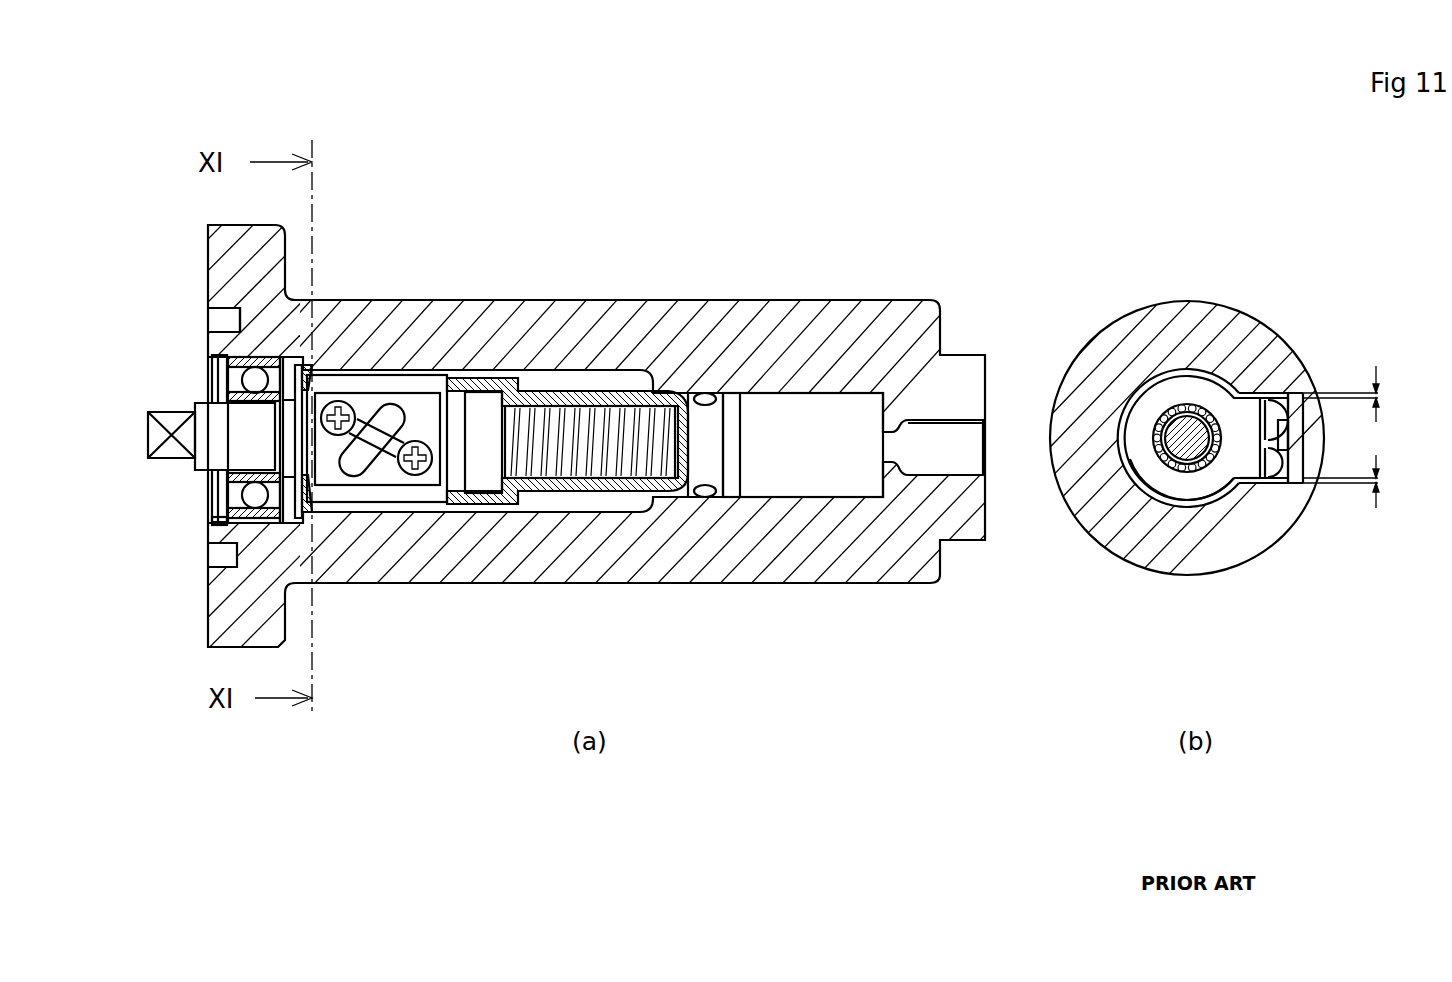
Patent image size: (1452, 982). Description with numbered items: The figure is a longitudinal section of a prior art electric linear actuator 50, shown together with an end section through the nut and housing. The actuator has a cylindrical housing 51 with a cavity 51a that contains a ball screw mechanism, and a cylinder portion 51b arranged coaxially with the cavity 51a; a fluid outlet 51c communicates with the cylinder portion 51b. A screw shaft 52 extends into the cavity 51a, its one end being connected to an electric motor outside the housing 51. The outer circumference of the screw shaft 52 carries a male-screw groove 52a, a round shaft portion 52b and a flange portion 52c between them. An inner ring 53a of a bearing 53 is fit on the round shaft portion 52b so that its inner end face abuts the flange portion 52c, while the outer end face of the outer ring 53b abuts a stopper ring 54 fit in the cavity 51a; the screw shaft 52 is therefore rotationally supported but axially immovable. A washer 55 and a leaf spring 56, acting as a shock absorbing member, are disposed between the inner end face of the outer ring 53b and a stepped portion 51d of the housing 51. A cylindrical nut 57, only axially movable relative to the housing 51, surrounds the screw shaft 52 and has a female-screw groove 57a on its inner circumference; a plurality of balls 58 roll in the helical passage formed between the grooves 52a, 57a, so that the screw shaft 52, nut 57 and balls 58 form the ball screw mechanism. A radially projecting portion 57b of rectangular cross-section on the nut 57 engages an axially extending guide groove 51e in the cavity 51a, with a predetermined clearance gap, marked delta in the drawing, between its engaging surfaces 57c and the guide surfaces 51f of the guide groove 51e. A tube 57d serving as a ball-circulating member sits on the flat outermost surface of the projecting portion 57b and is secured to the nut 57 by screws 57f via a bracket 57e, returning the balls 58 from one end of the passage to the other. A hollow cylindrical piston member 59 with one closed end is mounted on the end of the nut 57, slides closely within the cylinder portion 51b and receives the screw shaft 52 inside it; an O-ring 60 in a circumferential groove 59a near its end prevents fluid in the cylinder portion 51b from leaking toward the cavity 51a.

The electric linear actuator 50 is at (659, 272).
The cylindrical housing 51 is at (897, 306).
The cavity 51a is at (558, 380).
The cylinder portion 51b is at (784, 407).
The fluid outlet 51c is at (992, 450).
The stepped portion 51d is at (272, 512).
The guide groove 51e is at (1290, 443).
The guide surfaces 51f is at (1303, 395).
The screw shaft 52 is at (164, 403).
The male-screw groove 52a is at (560, 480).
The round shaft portion 52b is at (218, 352).
The flange portion 52c is at (287, 450).
The bearing 53 is at (214, 502).
The inner ring 53a is at (228, 480).
The outer ring 53b is at (210, 523).
The stopper ring 54 is at (207, 308).
The washer 55 is at (298, 518).
The leaf spring 56 is at (318, 512).
The cylindrical nut 57 is at (352, 444).
The female-screw groove 57a is at (1178, 470).
The radially projecting portion 57b is at (1248, 478).
The engaging surfaces 57c is at (1245, 488).
The tube 57d is at (407, 407).
The bracket 57e is at (387, 434).
The screws 57f is at (330, 402).
The balls 58 is at (1192, 410).
The piston member 59 is at (645, 491).
The circumferential groove 59a is at (715, 436).
The O-ring 60 is at (712, 497).